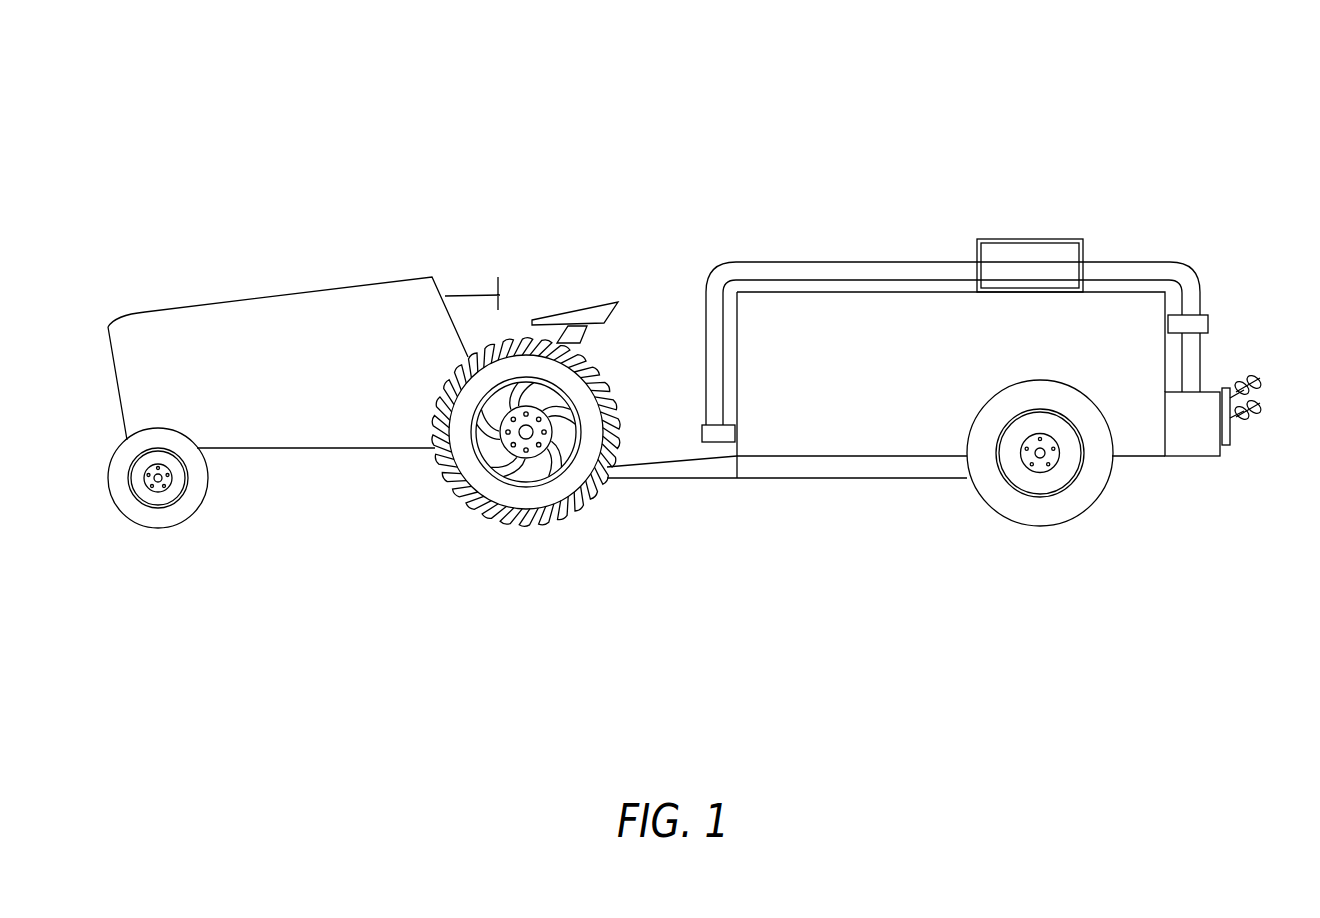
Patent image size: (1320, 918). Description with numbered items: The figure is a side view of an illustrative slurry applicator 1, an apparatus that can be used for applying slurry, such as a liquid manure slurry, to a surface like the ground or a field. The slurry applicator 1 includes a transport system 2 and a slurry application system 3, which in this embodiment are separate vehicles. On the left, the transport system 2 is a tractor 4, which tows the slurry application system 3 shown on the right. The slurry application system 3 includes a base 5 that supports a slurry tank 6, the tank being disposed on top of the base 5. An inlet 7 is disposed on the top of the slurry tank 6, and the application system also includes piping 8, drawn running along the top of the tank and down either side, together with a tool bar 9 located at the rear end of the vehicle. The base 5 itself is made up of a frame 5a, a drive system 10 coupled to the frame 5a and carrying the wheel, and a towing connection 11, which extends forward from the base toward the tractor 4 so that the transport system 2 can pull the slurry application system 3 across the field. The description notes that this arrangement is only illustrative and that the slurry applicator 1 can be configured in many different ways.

The slurry applicator 1 is at (1002, 95).
The transport system 2 is at (253, 297).
The slurry application system 3 is at (912, 445).
The tractor 4 is at (327, 288).
The base 5 is at (780, 467).
The frame 5a is at (948, 470).
The slurry tank 6 is at (822, 317).
The inlet 7 is at (1053, 238).
The piping 8 is at (763, 258).
The tool bar 9 is at (1232, 435).
The drive system 10 is at (830, 488).
The towing connection 11 is at (652, 473).